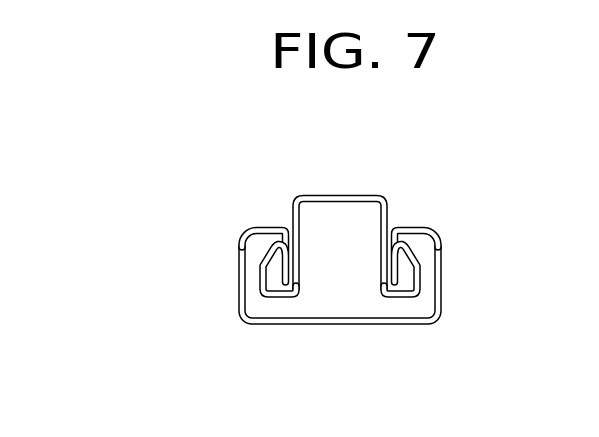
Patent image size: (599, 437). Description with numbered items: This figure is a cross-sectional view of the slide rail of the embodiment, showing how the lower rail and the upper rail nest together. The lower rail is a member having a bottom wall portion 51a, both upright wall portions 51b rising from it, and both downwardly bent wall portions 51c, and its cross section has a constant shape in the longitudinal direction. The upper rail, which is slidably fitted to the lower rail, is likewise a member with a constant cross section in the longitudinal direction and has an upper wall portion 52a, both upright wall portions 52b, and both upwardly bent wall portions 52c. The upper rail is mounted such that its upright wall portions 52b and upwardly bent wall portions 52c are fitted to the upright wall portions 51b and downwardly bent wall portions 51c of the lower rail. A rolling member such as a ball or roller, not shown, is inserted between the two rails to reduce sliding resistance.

The bottom wall portion 51a is at (320, 325).
The upright wall portions 51b is at (241, 277).
The downwardly bent wall portions 51c is at (265, 228).
The upper wall portion 52a is at (339, 195).
The upright wall portions 52b is at (379, 257).
The upwardly bent wall portions 52c is at (266, 298).